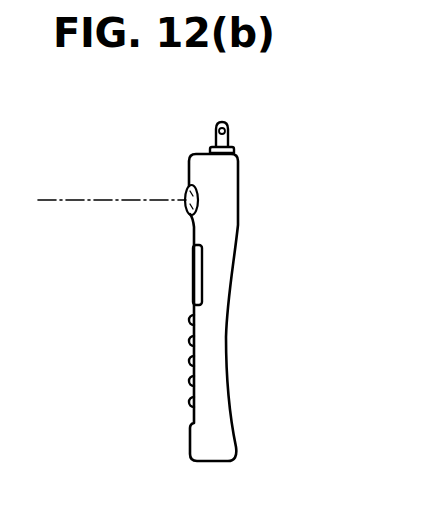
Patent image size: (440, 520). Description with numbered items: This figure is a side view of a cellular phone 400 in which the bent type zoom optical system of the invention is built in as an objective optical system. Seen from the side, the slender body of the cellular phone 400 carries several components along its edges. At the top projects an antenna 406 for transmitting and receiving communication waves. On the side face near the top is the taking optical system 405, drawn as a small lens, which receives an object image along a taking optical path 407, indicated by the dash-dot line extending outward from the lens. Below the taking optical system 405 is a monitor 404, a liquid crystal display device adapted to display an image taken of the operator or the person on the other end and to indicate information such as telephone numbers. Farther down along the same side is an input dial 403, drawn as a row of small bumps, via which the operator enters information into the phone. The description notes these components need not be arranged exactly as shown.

The cellular phone 400 is at (258, 340).
The input dial 403 is at (190, 360).
The monitor 404 is at (193, 275).
The taking optical system 405 is at (186, 204).
The antenna 406 is at (229, 138).
The taking optical path 407 is at (90, 200).